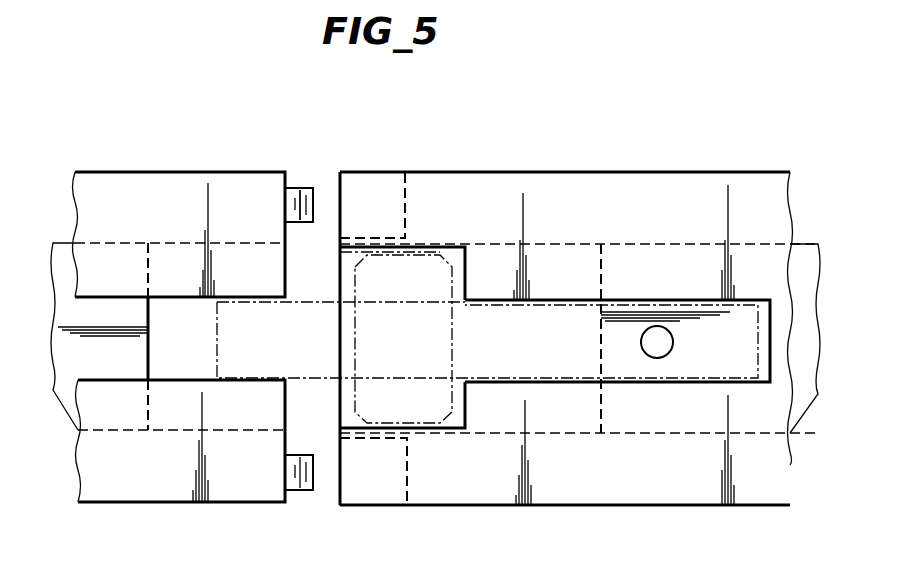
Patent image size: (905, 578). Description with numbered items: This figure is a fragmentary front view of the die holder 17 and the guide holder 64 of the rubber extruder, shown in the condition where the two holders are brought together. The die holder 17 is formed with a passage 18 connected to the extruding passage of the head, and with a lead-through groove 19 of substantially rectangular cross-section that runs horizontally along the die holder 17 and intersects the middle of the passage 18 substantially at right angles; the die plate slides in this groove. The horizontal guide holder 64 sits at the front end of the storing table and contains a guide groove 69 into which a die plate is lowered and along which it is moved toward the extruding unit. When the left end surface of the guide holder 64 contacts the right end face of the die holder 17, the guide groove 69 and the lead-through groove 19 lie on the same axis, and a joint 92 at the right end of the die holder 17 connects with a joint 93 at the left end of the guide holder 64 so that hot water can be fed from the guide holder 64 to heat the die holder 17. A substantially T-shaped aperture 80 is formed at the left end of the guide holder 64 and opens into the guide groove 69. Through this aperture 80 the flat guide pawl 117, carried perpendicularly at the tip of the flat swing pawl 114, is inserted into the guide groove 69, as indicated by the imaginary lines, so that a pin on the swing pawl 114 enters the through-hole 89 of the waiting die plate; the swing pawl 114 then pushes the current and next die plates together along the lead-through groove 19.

The die holder 17 is at (226, 172).
The passage 18 is at (176, 298).
The lead-through groove 19 is at (167, 243).
The guide holder 64 is at (648, 170).
The guide groove 69 is at (573, 432).
The T-shaped aperture 80 is at (465, 277).
The through-hole 89 is at (642, 340).
The joint 92 is at (300, 190).
The joint 93 is at (410, 188).
The swing pawl 114 is at (680, 380).
The guide pawl 117 is at (447, 258).